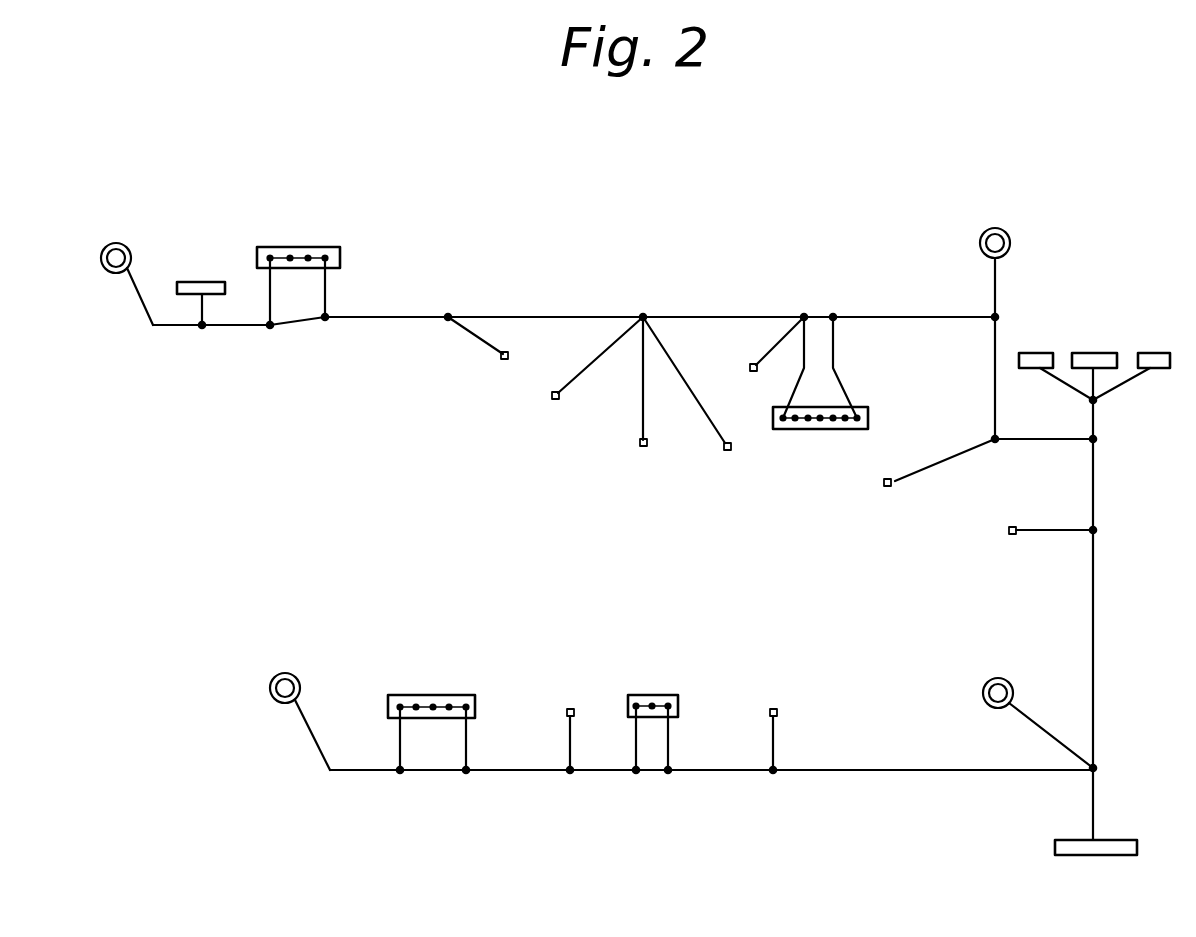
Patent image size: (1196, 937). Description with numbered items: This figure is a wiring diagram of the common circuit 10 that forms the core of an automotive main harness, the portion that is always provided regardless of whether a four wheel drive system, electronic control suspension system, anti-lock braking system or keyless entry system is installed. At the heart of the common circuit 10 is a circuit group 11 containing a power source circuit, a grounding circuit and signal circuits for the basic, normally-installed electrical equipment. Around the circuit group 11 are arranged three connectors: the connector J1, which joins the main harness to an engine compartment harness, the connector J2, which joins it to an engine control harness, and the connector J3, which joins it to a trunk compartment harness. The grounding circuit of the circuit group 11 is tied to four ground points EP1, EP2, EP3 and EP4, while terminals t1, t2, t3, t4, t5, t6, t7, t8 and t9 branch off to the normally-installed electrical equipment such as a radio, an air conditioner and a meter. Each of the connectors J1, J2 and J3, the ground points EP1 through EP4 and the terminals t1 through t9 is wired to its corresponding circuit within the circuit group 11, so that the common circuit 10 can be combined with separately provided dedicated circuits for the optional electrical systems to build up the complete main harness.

The common circuit 10 is at (350, 415).
The circuit group 11 is at (390, 318).
The ground point EP1 is at (116, 243).
The ground point EP2 is at (993, 228).
The ground point EP3 is at (989, 677).
The ground point EP4 is at (286, 673).
The connector J1 is at (1152, 355).
The connector J2 is at (194, 289).
The connector J3 is at (1124, 838).
The terminal t1 is at (479, 350).
The terminal t2 is at (595, 371).
The terminal t3 is at (641, 395).
The terminal t4 is at (688, 399).
The terminal t5 is at (773, 357).
The terminal t6 is at (934, 479).
The terminal t7 is at (1035, 531).
The terminal t8 is at (768, 726).
The terminal t9 is at (566, 726).